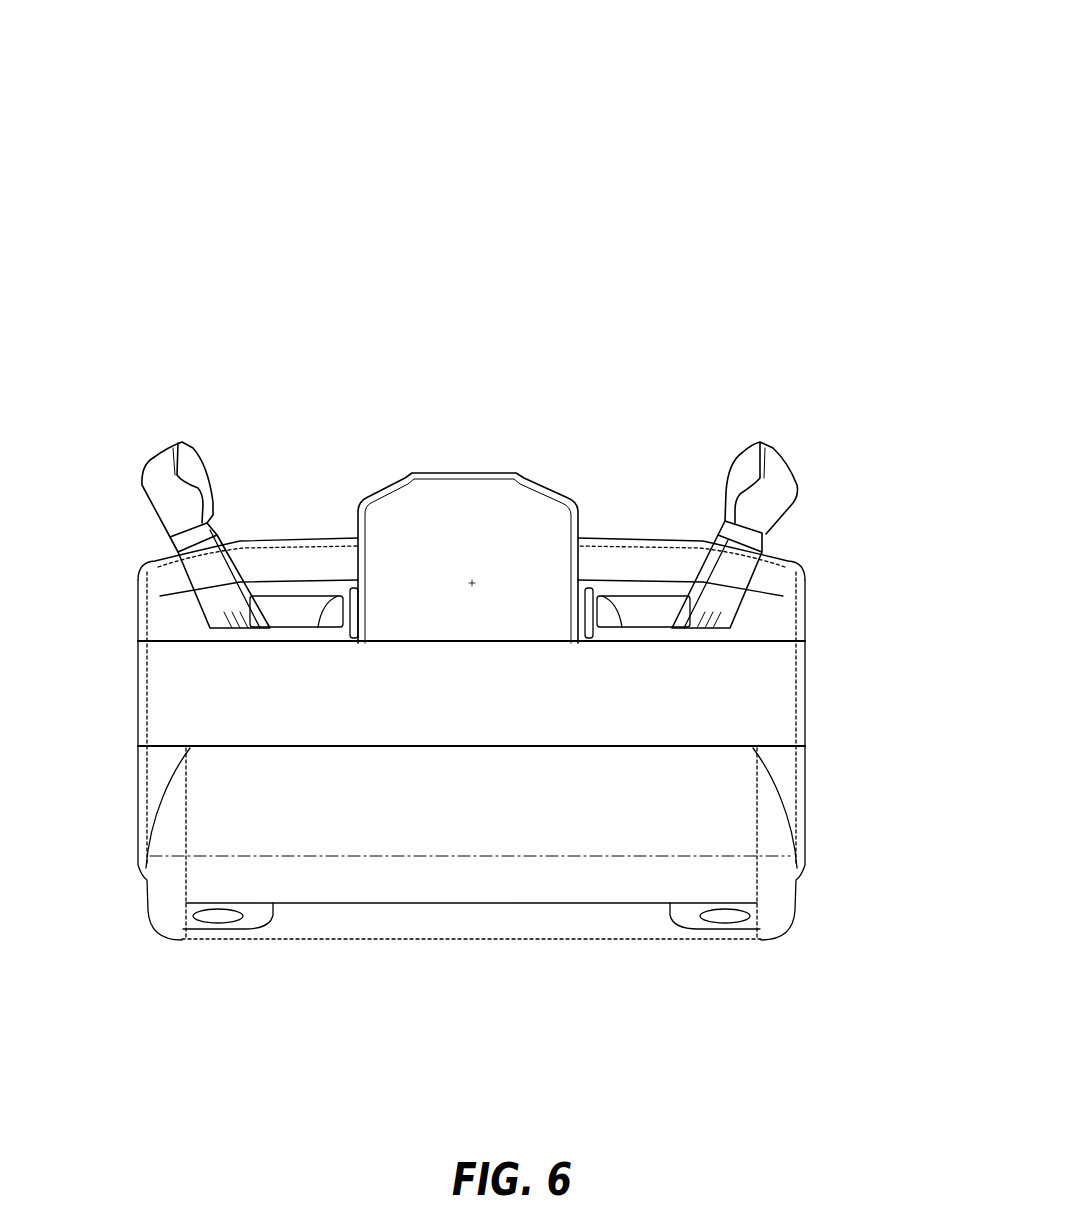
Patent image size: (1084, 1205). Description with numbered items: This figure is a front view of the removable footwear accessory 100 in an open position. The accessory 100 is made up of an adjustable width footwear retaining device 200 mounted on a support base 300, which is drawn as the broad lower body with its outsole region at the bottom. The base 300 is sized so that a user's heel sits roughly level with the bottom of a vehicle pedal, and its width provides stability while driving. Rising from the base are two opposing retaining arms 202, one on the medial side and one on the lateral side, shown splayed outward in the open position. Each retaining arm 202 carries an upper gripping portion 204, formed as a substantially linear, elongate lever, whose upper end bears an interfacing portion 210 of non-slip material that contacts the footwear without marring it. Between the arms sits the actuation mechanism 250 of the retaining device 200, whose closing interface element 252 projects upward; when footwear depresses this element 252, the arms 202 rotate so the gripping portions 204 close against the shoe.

The removable footwear accessory 100 is at (787, 140).
The footwear retaining device 200 is at (745, 372).
The retaining arm 202 is at (178, 372).
The upper gripping portion 204 is at (177, 520).
The interfacing portion 210 is at (207, 482).
The actuation mechanism 250 is at (590, 403).
The closing interface element 252 is at (475, 537).
The base 300 is at (838, 882).